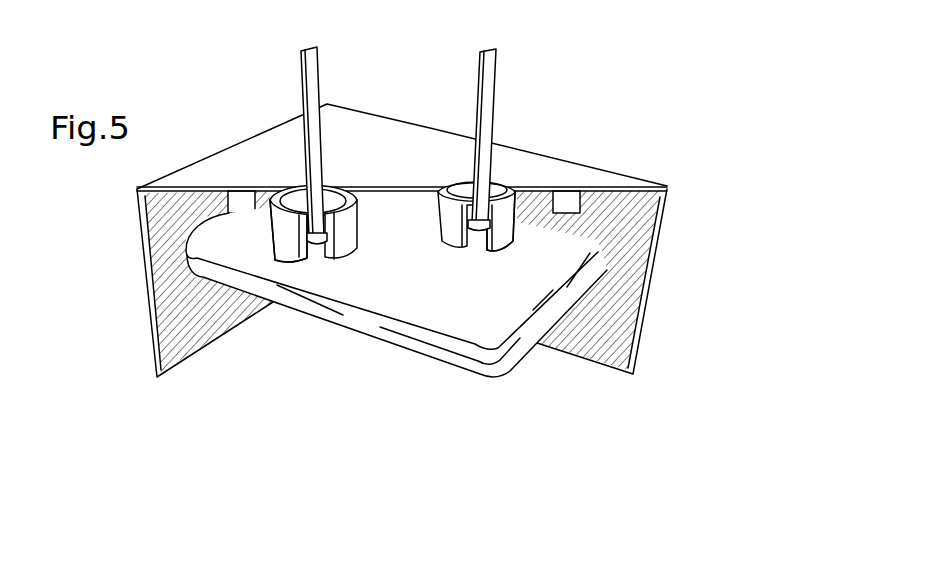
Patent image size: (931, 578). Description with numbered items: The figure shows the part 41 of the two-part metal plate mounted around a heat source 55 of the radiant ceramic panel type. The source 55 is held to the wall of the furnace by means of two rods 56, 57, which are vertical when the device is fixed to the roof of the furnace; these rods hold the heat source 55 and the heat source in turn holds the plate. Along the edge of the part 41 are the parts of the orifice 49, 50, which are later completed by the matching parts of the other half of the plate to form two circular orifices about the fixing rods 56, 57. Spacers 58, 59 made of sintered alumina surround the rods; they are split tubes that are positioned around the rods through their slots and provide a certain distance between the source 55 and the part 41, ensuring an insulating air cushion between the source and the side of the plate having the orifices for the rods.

The part of the plate 41 is at (634, 143).
The part of orifice 49 is at (274, 260).
The part of orifice 50 is at (596, 168).
The heat source 55 is at (492, 318).
The fixing rod 56 is at (291, 87).
The fixing rod 57 is at (510, 78).
The spacer 58 is at (281, 257).
The spacer 59 is at (507, 222).